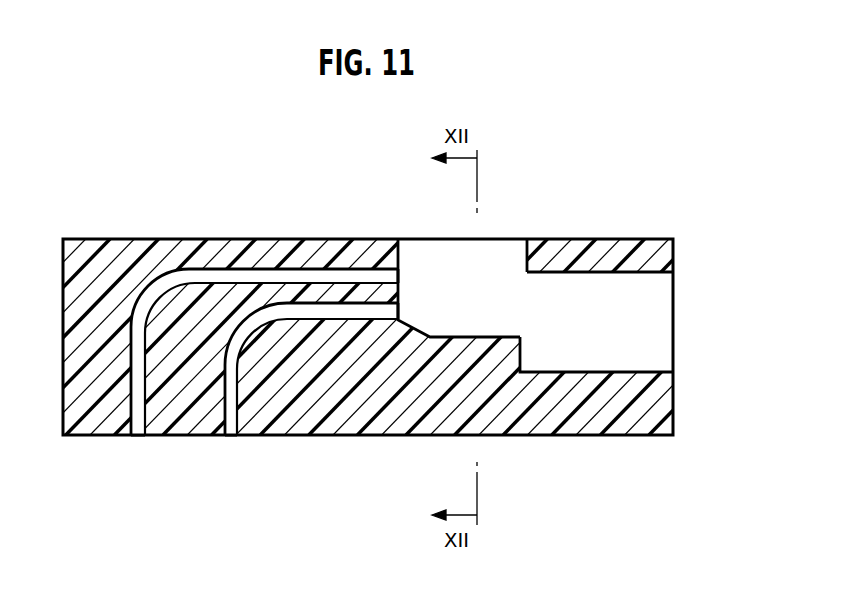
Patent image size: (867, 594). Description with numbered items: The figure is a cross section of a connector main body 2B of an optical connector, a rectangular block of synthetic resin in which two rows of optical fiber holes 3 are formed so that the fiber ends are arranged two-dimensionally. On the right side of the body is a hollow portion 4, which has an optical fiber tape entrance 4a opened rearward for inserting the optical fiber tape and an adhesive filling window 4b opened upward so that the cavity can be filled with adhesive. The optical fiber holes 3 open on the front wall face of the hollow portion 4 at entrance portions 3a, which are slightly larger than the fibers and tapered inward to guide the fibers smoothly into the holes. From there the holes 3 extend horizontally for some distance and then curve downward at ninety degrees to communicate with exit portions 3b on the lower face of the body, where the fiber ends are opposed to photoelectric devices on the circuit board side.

The connector main body 2B is at (287, 240).
The optical fiber holes 3 is at (159, 298).
The entrance portions 3a is at (392, 278).
The exit portions 3b is at (133, 436).
The hollow portion 4 is at (565, 276).
The optical fiber tape entrance 4a is at (658, 325).
The adhesive filling window 4b is at (405, 250).